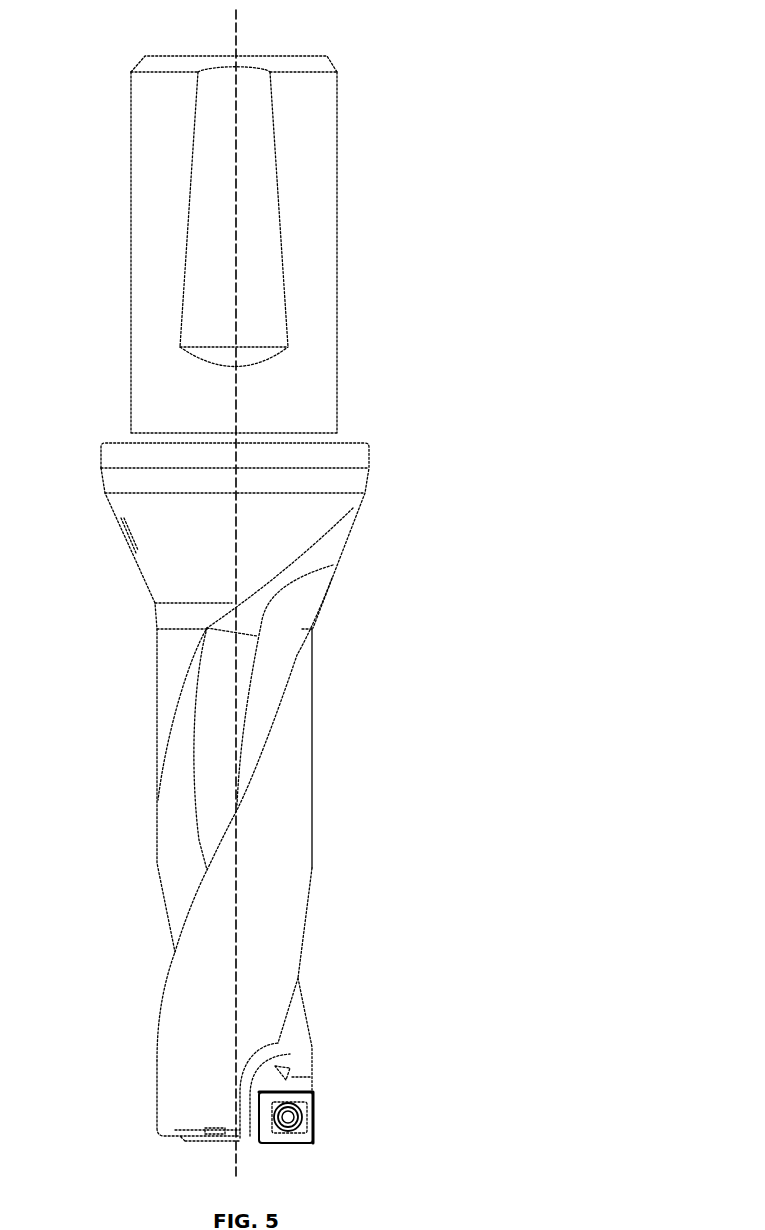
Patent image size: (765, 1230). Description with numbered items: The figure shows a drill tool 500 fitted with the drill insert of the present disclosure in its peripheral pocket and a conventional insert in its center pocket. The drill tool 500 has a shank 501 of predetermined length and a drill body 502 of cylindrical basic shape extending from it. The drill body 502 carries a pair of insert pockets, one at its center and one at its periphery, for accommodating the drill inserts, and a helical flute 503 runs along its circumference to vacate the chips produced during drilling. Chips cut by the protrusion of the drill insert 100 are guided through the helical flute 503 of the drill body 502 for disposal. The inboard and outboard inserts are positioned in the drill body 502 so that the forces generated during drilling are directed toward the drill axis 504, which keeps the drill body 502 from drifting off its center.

The drill tool 500 is at (460, 102).
The shank 501 is at (333, 328).
The drill body 502 is at (310, 658).
The helical flute 503 is at (173, 780).
The drill axis 504 is at (237, 942).
The drill insert 100 is at (303, 1108).